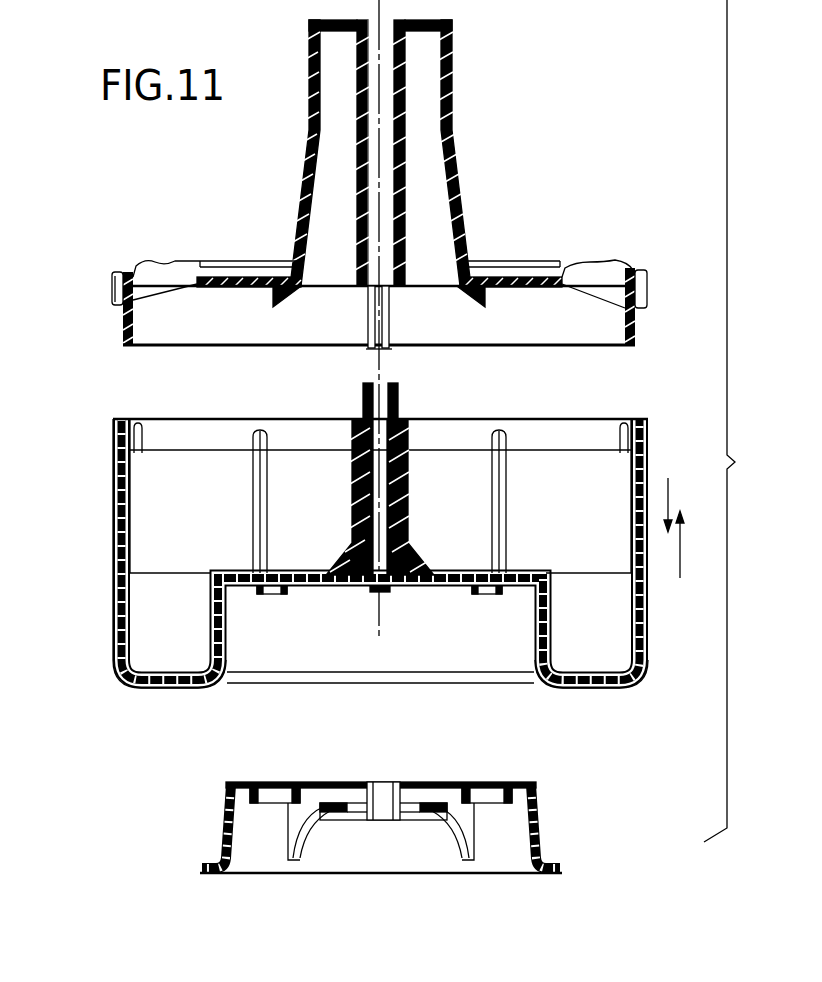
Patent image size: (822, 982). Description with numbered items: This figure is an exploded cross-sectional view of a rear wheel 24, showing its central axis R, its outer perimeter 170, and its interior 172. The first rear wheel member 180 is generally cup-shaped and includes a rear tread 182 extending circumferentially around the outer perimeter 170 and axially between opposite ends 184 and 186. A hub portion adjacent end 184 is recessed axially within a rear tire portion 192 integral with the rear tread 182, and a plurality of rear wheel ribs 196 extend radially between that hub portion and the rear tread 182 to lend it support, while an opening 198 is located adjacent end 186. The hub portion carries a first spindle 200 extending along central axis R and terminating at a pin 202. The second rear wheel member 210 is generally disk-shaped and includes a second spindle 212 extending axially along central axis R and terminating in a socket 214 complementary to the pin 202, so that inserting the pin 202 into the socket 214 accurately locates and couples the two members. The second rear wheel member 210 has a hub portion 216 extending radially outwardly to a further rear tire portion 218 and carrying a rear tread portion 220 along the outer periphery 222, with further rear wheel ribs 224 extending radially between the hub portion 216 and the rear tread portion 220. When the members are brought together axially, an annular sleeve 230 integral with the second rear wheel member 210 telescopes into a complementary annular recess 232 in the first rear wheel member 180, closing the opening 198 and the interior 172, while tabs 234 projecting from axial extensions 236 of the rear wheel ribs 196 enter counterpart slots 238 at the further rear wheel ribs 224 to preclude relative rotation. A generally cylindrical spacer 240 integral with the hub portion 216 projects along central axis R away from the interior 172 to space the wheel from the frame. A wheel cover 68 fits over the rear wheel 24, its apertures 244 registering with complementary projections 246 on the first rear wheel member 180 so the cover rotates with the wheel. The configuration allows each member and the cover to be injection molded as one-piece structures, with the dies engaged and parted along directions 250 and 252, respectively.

The rear wheel 24 is at (96, 537).
The wheel cover 68 is at (232, 805).
The outer perimeter 170 is at (113, 498).
The interior 172 is at (570, 519).
The first rear wheel member 180 is at (118, 592).
The rear tread 182 is at (113, 444).
The end 184 is at (123, 678).
The end 186 is at (124, 413).
The rear tire portion 192 is at (167, 690).
The rear wheel ribs 196 is at (179, 662).
The opening 198 is at (548, 428).
The first spindle 200 is at (400, 506).
The pin 202 is at (396, 403).
The second rear wheel member 210 is at (147, 264).
The second spindle 212 is at (407, 206).
The socket 214 is at (388, 264).
The hub portion 216 is at (263, 288).
The further rear tire portion 218 is at (114, 280).
The rear tread portion 220 is at (113, 301).
The outer periphery 222 is at (641, 284).
The further rear wheel ribs 224 is at (168, 289).
The annular sleeve 230 is at (637, 337).
The annular recess 232 is at (627, 414).
The tabs 234 is at (250, 434).
The axial extensions 236 is at (250, 528).
The slots 238 is at (376, 331).
The spacer 240 is at (456, 101).
The apertures 244 is at (263, 797).
The projections 246 is at (268, 594).
The direction 250 is at (668, 478).
The direction 252 is at (680, 578).
The central axis R is at (381, 631).